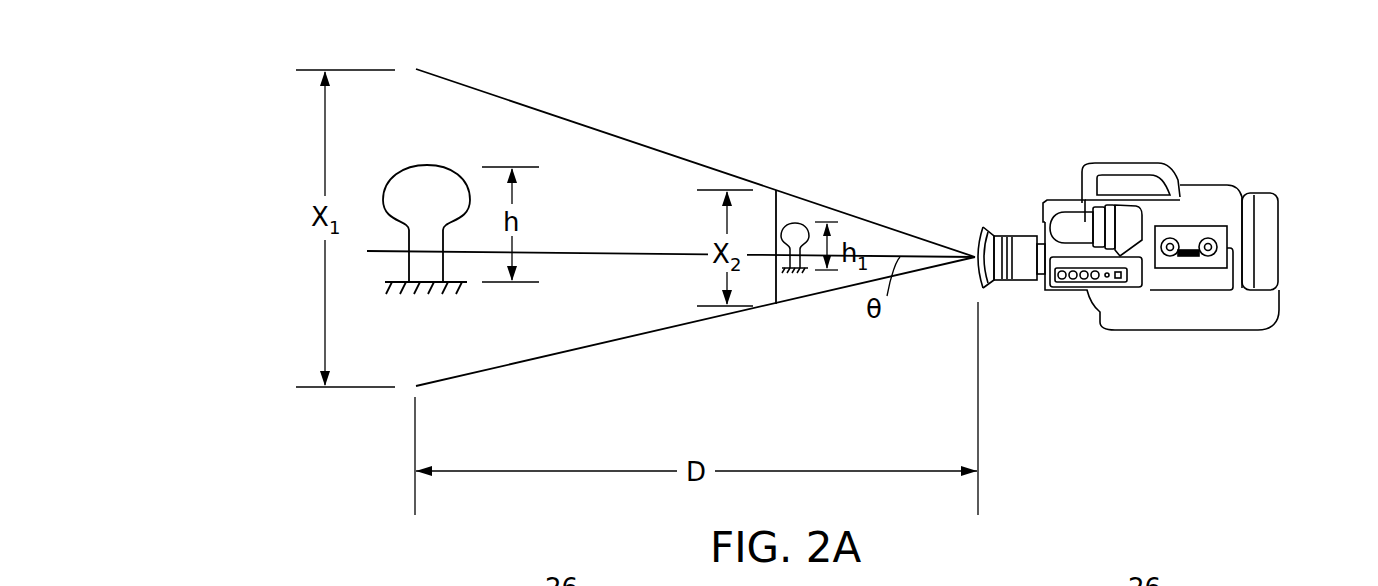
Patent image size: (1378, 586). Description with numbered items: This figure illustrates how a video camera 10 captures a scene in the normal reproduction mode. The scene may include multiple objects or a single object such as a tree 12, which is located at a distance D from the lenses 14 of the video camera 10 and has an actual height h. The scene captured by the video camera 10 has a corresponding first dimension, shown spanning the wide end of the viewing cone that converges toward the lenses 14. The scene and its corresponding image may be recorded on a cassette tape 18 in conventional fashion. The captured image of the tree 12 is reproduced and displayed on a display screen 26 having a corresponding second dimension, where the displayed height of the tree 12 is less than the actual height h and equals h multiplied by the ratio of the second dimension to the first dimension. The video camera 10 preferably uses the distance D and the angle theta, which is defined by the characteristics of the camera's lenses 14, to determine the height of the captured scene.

The video camera 10 is at (1165, 170).
The tree 12 is at (423, 166).
The lenses 14 is at (980, 227).
The cassette tape 18 is at (1228, 238).
The display screen 26 is at (778, 205).